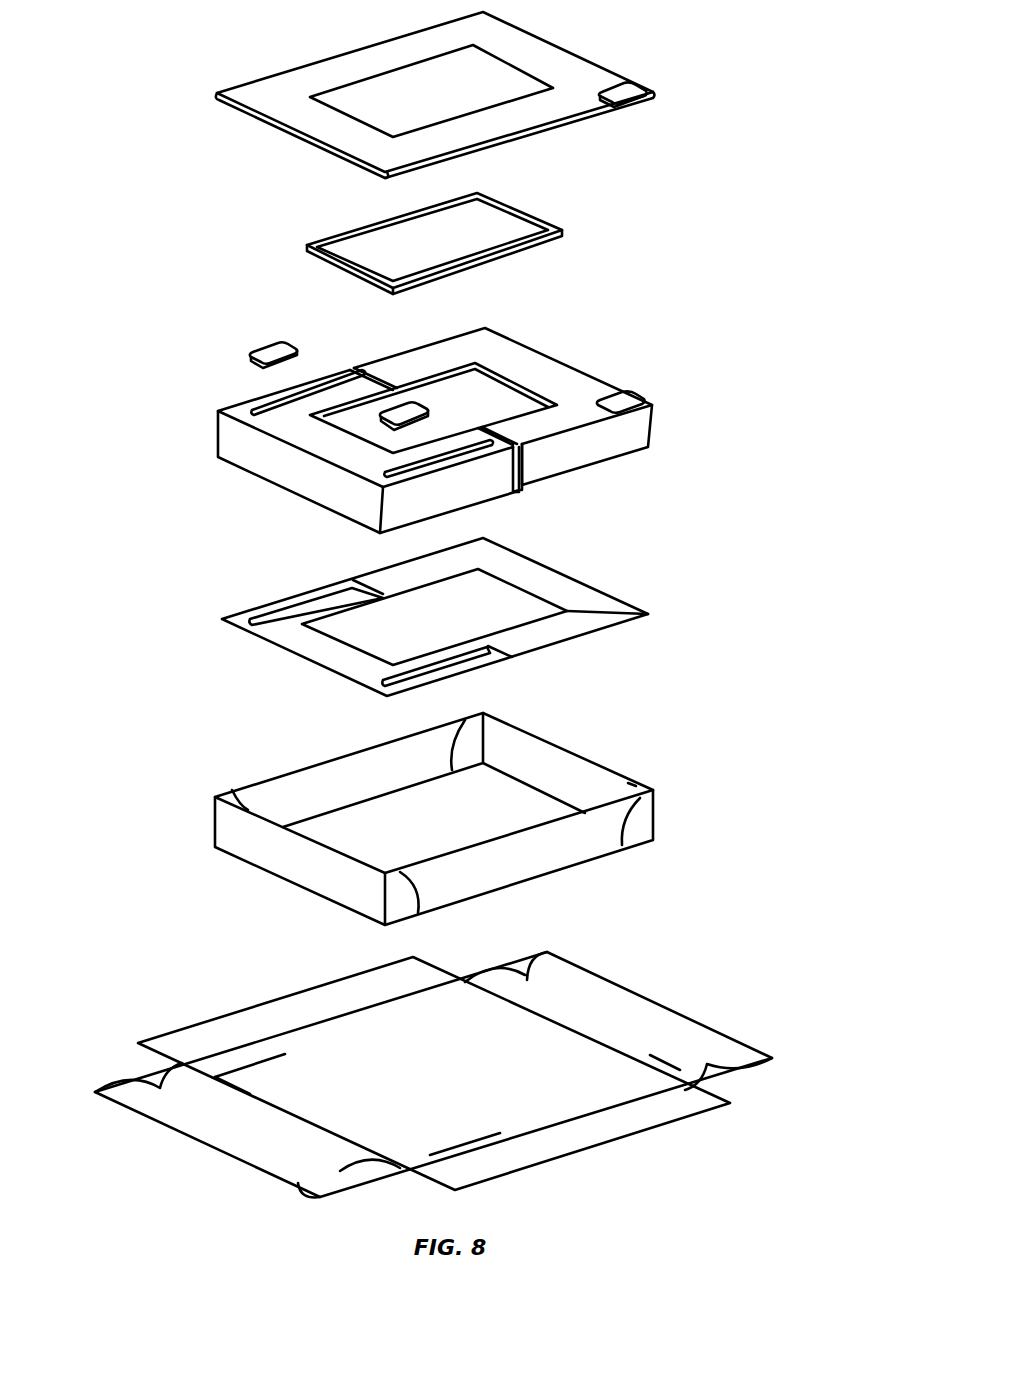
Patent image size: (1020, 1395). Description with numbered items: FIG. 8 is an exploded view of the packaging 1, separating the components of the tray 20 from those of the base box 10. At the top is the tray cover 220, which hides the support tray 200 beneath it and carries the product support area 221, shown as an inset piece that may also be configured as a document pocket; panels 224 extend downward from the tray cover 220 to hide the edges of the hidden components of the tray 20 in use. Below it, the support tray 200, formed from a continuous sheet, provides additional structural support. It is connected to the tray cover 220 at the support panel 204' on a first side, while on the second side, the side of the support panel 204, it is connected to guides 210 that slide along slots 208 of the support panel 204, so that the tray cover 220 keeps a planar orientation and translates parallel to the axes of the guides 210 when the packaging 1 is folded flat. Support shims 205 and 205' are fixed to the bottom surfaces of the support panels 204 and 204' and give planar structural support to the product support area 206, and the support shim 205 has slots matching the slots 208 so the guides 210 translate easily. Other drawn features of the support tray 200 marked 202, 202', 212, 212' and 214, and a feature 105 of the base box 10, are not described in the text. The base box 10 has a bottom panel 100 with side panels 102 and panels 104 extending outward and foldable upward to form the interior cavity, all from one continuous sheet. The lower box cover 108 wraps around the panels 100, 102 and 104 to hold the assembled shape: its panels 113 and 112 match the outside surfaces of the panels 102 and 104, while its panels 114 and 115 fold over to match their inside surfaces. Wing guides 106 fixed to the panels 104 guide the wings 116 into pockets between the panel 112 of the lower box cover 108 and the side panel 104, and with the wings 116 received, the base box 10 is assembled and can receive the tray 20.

The packaging 1 is at (795, 78).
The base box 10 is at (82, 1203).
The tray 20 is at (82, 676).
The bottom panel 100 is at (476, 813).
The side panels 102 is at (545, 745).
The side panels 104 is at (290, 785).
The top rim edge 105 is at (355, 770).
The wing guides 106 is at (662, 825).
The lower box cover 108 is at (471, 1101).
The panels 112 is at (225, 1042).
The panels 113 is at (682, 1052).
The panels 114 is at (270, 1005).
The panels 115 is at (615, 1000).
The wings 116 is at (501, 956).
The support tray 200 is at (462, 419).
The frame side wall 202 is at (339, 472).
The frame side wall 202' is at (643, 445).
The support panel 204 is at (331, 428).
The support panel 204' is at (503, 370).
The support shim 205 is at (441, 617).
The support shim 205' is at (638, 584).
The product support area 206 is at (490, 400).
The slots 208 is at (258, 408).
The guides 210 is at (265, 350).
The flange 212 is at (466, 490).
The flange 212' is at (582, 469).
The junction 214 is at (518, 494).
The tray cover 220 is at (477, 90).
The product support area 221 is at (505, 225).
The panels 224 is at (654, 100).